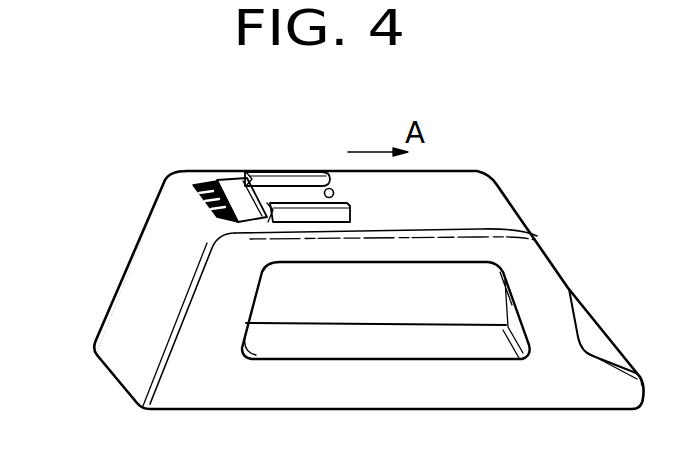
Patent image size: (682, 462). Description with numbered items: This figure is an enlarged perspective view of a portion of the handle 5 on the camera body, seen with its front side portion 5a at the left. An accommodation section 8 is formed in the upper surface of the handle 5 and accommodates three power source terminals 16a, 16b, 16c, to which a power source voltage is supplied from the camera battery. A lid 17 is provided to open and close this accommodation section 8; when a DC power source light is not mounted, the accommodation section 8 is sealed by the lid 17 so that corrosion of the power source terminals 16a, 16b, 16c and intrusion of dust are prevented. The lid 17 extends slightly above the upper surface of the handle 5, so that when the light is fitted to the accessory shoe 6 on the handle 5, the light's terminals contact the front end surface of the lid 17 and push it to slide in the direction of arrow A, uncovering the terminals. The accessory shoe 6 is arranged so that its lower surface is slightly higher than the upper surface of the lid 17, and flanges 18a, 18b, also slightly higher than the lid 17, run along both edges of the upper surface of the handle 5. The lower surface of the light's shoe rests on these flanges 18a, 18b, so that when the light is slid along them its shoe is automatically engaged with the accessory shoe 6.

The handle 5 is at (447, 190).
The front side portion of the handle 5a is at (127, 290).
The accessory shoe 6 is at (304, 171).
The accommodation section 8 is at (160, 169).
The power source terminal 16a is at (200, 183).
The power source terminal 16b is at (200, 202).
The power source terminal 16c is at (220, 220).
The lid 17 is at (233, 188).
The flange 18a is at (478, 170).
The flange 18b is at (510, 232).